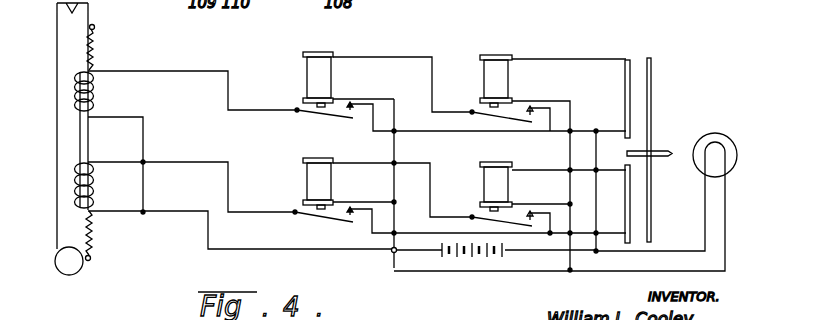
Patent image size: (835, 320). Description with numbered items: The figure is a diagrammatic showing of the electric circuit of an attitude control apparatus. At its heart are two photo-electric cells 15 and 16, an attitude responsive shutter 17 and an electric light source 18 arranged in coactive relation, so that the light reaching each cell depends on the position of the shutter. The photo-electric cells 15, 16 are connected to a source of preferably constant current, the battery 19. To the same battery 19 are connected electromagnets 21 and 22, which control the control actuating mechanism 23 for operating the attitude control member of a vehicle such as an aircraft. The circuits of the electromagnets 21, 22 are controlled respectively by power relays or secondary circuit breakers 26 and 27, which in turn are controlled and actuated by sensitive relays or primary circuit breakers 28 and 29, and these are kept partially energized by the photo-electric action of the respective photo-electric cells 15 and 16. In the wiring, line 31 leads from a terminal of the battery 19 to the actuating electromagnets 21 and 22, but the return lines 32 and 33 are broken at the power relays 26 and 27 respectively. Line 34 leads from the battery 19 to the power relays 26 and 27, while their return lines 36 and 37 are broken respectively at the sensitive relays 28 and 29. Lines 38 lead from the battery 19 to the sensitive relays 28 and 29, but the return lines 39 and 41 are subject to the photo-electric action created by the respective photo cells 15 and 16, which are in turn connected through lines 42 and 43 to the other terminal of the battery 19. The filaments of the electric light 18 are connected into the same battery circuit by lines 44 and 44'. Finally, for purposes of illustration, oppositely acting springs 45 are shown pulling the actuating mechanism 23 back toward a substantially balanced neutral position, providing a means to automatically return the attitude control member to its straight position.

The photo-electric cell 15 is at (632, 64).
The photo-electric cell 16 is at (632, 194).
The attitude responsive shutter 17 is at (653, 95).
The electric light source 18 is at (723, 135).
The battery 19 is at (480, 265).
The electromagnet 21 is at (95, 95).
The electromagnet 22 is at (93, 198).
The control actuating mechanism 23 is at (85, 131).
The power relay 26 is at (312, 77).
The power relay 27 is at (312, 180).
The sensitive relay 28 is at (487, 63).
The sensitive relay 29 is at (488, 178).
The line 31 is at (251, 250).
The return line 32 is at (200, 72).
The return line 33 is at (196, 161).
The line 34 is at (384, 99).
The return line 36 is at (443, 112).
The return line 37 is at (442, 214).
The line 38 is at (560, 102).
The return line 39 is at (567, 61).
The return line 41 is at (535, 170).
The line 42 is at (607, 132).
The line 43 is at (607, 234).
The line 44 is at (660, 197).
The line 44' is at (574, 222).
The spring 45 is at (96, 34).